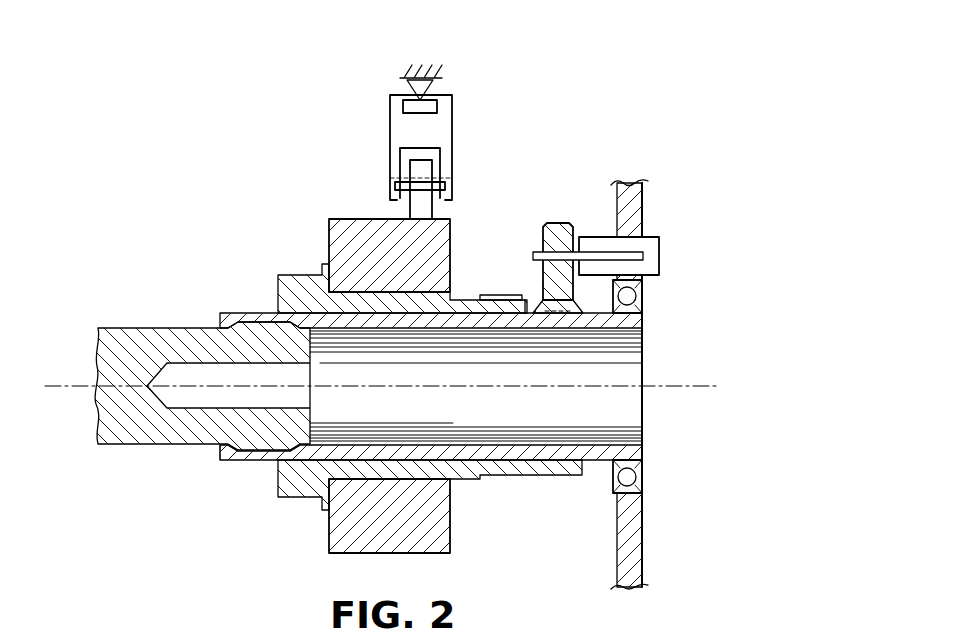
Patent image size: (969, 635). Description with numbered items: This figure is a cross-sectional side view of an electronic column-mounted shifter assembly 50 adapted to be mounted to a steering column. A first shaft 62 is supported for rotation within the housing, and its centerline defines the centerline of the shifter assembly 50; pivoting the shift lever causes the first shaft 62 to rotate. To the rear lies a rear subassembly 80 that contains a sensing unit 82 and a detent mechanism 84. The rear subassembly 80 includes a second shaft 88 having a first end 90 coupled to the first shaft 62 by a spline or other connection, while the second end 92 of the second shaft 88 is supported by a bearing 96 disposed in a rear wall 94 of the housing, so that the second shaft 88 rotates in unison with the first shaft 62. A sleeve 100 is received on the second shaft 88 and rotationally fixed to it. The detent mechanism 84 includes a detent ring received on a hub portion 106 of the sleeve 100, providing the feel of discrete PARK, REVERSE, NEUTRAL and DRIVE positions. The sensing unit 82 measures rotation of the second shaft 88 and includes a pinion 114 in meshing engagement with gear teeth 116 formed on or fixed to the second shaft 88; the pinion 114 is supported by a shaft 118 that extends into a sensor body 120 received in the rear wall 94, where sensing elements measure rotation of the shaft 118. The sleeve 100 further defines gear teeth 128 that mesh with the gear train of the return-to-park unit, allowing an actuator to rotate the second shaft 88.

The electronic column-mounted shifter assembly 50 is at (207, 212).
The first shaft 62 is at (160, 328).
The rear subassembly 80 is at (552, 118).
The sensing unit 82 is at (643, 225).
The detent mechanism 84 is at (458, 87).
The second shaft 88 is at (642, 452).
The first end 90 is at (222, 462).
The second end 92 is at (635, 322).
The rear wall 94 is at (642, 535).
The bearing 96 is at (638, 297).
The sleeve 100 is at (323, 268).
The hub portion 106 is at (462, 292).
The pinion 114 is at (558, 222).
The gear teeth 116 is at (528, 300).
The shaft 118 is at (592, 252).
The sensor body 120 is at (660, 255).
The gear teeth 128 is at (500, 478).